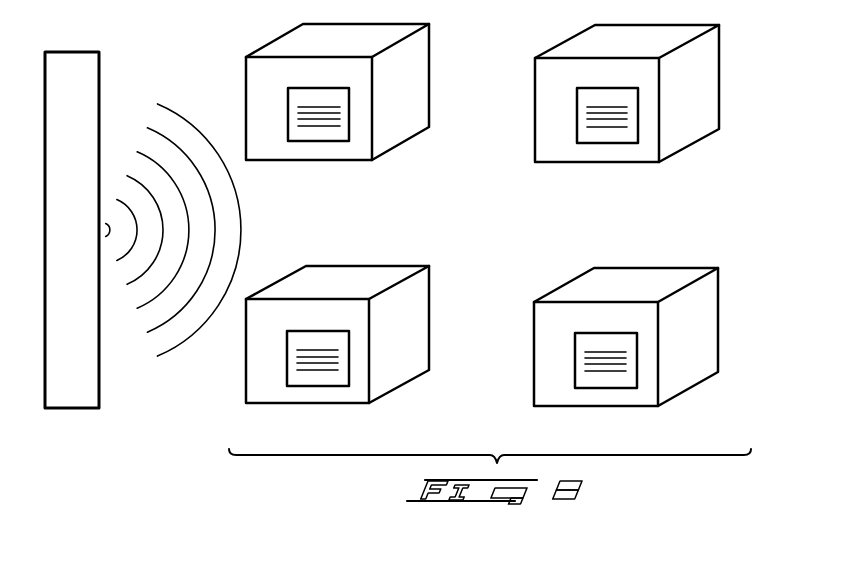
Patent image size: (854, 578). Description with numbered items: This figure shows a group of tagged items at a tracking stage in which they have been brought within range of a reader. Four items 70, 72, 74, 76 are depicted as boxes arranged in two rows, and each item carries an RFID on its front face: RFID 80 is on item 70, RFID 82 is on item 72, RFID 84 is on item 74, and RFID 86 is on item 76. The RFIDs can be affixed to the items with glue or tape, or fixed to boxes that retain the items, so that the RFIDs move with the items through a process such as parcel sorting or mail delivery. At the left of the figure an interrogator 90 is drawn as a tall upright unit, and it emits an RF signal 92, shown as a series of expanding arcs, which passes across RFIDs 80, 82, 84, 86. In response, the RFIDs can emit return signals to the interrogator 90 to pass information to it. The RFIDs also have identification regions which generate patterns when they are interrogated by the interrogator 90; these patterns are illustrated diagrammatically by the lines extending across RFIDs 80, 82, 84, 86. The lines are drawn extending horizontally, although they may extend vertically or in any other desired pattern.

The item 70 is at (408, 90).
The item 72 is at (697, 92).
The item 74 is at (407, 334).
The item 76 is at (697, 336).
The RFID 80 is at (326, 142).
The RFID 82 is at (615, 143).
The RFID 84 is at (325, 386).
The RFID 86 is at (612, 388).
The interrogator 90 is at (85, 368).
The RF signal 92 is at (148, 145).